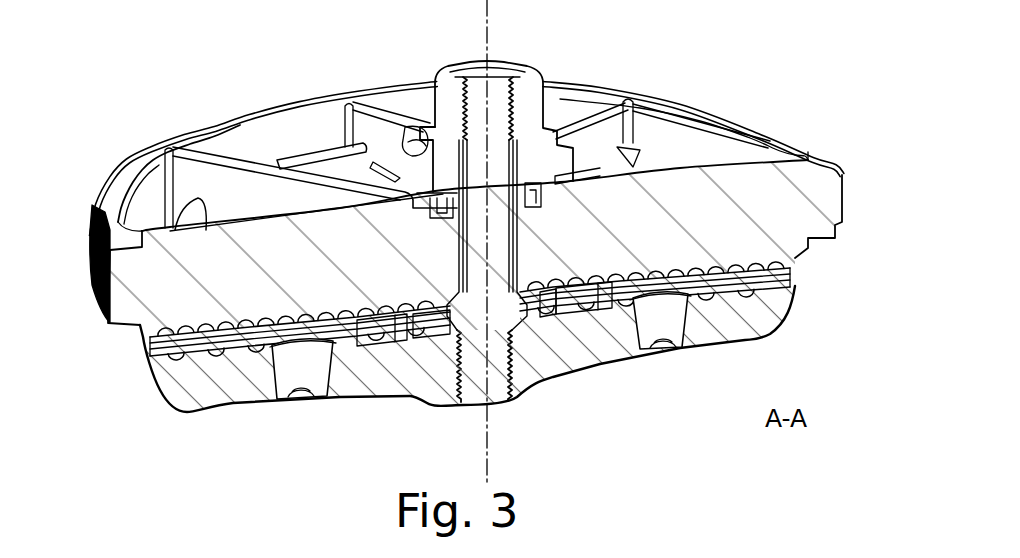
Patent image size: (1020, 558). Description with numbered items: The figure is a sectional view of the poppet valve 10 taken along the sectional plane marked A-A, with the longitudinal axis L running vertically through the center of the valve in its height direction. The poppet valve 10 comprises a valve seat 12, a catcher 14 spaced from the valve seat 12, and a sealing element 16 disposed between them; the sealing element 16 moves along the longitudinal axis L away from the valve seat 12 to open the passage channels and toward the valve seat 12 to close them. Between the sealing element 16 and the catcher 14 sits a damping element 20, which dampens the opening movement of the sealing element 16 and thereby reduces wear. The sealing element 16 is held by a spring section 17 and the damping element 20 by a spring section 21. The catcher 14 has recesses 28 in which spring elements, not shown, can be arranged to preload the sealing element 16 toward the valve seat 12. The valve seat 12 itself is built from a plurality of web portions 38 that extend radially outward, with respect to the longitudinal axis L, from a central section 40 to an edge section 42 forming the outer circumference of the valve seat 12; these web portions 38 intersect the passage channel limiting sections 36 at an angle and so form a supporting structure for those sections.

The poppet valve 10 is at (738, 100).
The valve seat 12 is at (832, 180).
The catcher 14 is at (780, 318).
The sealing element 16 is at (797, 262).
The spring section 17 is at (585, 296).
The damping element 20 is at (795, 278).
The spring section 21 is at (580, 310).
The recesses 28 is at (305, 365).
The passage channel limiting sections 36 is at (190, 213).
The web portions 38 is at (213, 157).
The central section 40 is at (447, 272).
The edge section 42 is at (127, 290).
The longitudinal axis L is at (487, 33).